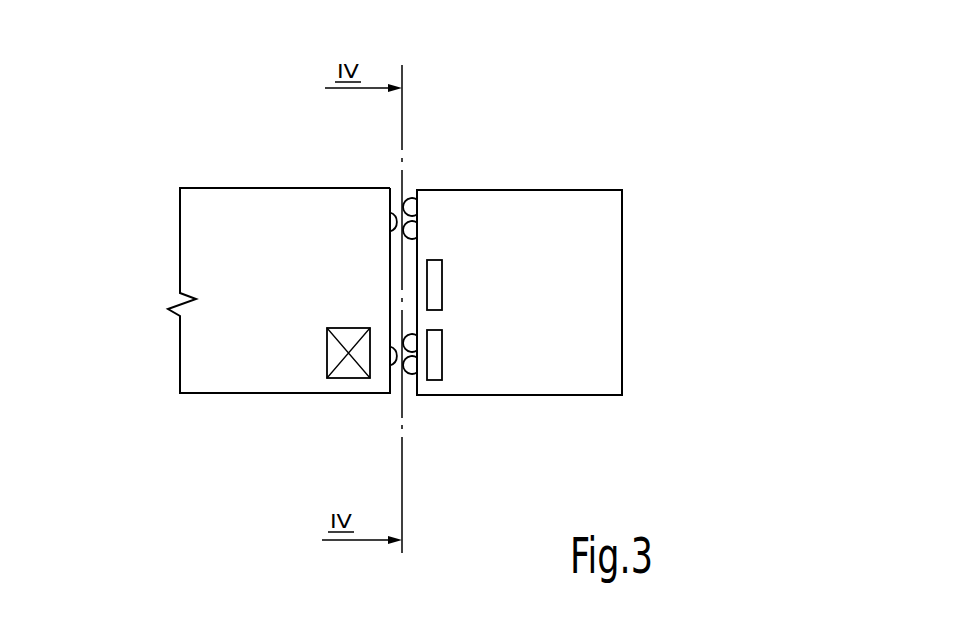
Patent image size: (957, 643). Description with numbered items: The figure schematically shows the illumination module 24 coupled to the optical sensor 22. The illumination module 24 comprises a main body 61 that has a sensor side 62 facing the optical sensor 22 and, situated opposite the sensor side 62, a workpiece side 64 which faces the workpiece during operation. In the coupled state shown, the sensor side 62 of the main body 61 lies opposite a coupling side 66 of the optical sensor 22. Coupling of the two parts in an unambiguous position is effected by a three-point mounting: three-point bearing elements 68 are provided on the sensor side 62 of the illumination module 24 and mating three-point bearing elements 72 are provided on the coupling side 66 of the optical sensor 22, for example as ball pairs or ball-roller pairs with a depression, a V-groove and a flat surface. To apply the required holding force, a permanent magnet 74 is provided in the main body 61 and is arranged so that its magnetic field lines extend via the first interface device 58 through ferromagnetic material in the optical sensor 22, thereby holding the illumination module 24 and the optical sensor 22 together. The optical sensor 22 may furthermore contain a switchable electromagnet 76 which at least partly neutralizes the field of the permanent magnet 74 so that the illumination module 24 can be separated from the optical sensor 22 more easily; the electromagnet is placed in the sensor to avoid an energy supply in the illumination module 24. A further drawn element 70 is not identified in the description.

The optical sensor 22 is at (232, 217).
The illumination module 24 is at (592, 220).
The first interface device 58 is at (402, 487).
The main body 61 is at (585, 268).
The sensor side 62 is at (416, 407).
The workpiece side 64 is at (637, 352).
The coupling side 66 is at (386, 406).
The three-point bearing elements 68 is at (428, 178).
The gap 70 is at (410, 195).
The three-point bearing elements 72 is at (390, 190).
The permanent magnet 74 is at (436, 262).
The electromagnet 76 is at (327, 362).